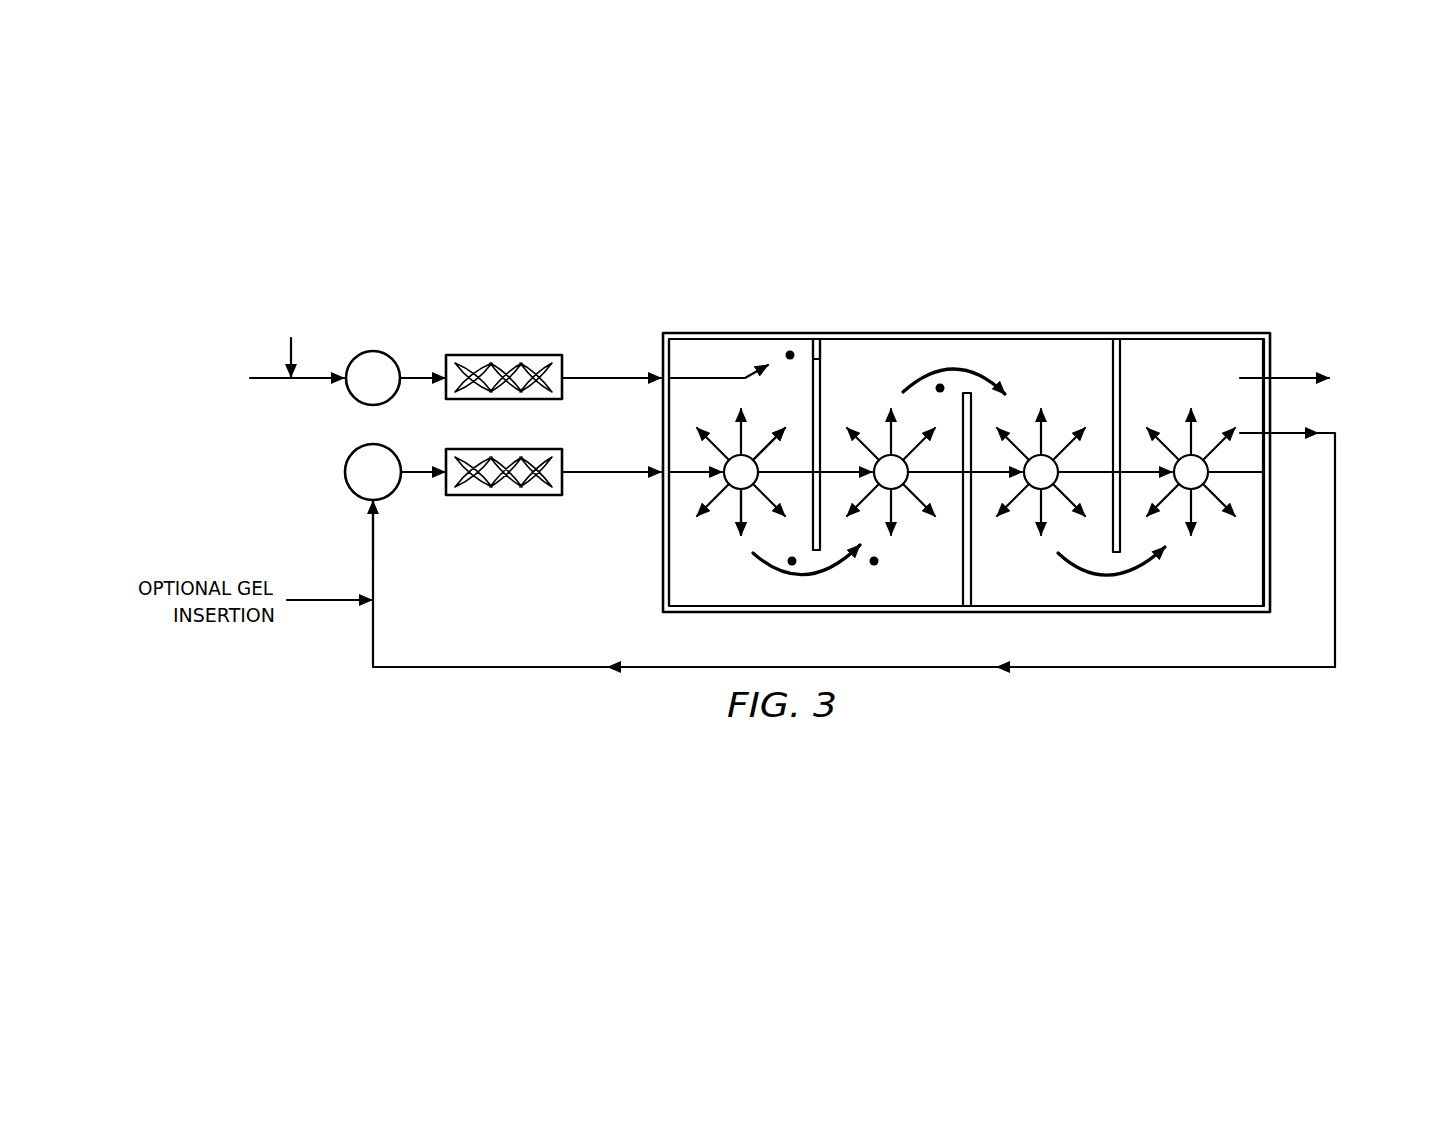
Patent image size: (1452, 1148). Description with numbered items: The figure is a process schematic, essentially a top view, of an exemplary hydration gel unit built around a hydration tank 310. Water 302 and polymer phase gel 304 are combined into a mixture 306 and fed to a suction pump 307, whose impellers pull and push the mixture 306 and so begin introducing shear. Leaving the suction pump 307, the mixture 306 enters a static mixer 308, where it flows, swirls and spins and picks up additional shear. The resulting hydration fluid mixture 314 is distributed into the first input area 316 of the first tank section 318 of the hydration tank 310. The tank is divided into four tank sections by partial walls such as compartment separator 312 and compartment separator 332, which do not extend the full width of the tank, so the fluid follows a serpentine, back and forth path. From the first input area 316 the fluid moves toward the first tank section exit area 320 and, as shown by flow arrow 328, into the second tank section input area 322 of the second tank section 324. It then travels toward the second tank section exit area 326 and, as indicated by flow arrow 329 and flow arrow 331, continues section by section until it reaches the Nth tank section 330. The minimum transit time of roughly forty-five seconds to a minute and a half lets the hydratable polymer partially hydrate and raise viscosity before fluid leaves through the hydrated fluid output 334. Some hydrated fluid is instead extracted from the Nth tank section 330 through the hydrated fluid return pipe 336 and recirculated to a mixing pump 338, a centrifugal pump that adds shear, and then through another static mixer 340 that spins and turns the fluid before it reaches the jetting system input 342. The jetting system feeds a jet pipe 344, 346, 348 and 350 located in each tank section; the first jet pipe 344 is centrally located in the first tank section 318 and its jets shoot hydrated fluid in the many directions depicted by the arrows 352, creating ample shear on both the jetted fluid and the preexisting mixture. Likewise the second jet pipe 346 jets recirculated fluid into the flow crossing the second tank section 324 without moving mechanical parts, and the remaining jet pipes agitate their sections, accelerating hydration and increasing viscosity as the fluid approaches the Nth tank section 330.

The water 302 is at (267, 368).
The polymer phase gel 304 is at (291, 329).
The mixture 306 is at (312, 380).
The suction pump 307 is at (370, 351).
The static mixer 308 is at (513, 354).
The hydration tank 310 is at (1078, 333).
The compartment separator 312 is at (822, 357).
The hydration fluid mixture 314 is at (612, 376).
The first input area 316 is at (783, 353).
The first tank section 318 is at (701, 360).
The first tank section exit area 320 is at (790, 565).
The second tank section input area 322 is at (878, 563).
The second tank section 324 is at (878, 370).
The second tank section exit area 326 is at (941, 384).
The flow arrow 328 is at (810, 578).
The flow arrow 329 is at (968, 370).
The Nth tank section 330 is at (1222, 368).
The flow arrow 331 is at (1113, 578).
The compartment separator 332 is at (1121, 388).
The hydrated fluid output 334 is at (1284, 377).
The hydrated fluid return pipe 336 is at (1284, 436).
The mixing pump 338 is at (345, 472).
The static mixer 340 is at (516, 497).
The jetting system input 342 is at (604, 476).
The first jet pipe 344 is at (730, 448).
The second jet pipe 346 is at (906, 494).
The jet pipe 348 is at (1048, 455).
The jet pipe 350 is at (1200, 494).
The arrows 352 is at (760, 446).